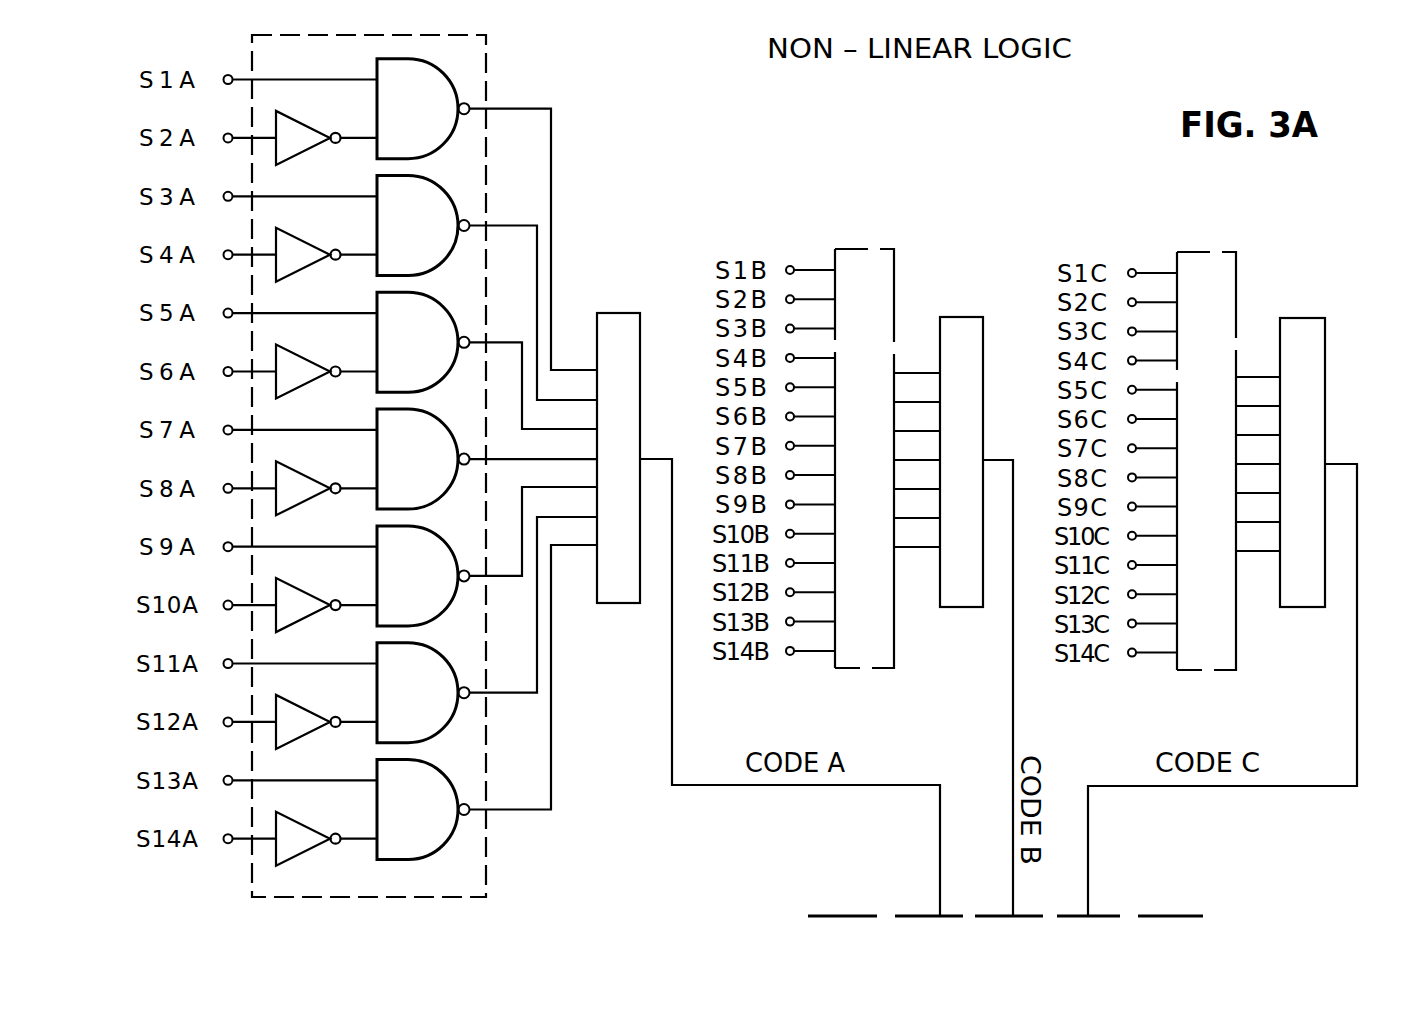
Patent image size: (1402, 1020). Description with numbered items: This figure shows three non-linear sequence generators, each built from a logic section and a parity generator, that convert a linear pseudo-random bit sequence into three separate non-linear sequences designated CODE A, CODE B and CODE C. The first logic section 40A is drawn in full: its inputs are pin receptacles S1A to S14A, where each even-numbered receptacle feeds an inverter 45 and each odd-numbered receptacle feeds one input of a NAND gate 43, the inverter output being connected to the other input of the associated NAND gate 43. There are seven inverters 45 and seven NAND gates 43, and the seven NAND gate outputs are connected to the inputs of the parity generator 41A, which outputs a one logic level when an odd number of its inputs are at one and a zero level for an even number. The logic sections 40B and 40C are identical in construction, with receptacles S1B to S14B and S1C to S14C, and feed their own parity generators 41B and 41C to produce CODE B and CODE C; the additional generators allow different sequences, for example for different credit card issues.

The logic section 40A is at (371, 26).
The NAND gate 43 is at (445, 89).
The inverter 45 is at (303, 130).
The parity generator 41A is at (616, 313).
The logic section 40B is at (853, 243).
The parity generator 41B is at (958, 317).
The logic section 40C is at (1226, 246).
The parity generator 41C is at (1302, 318).